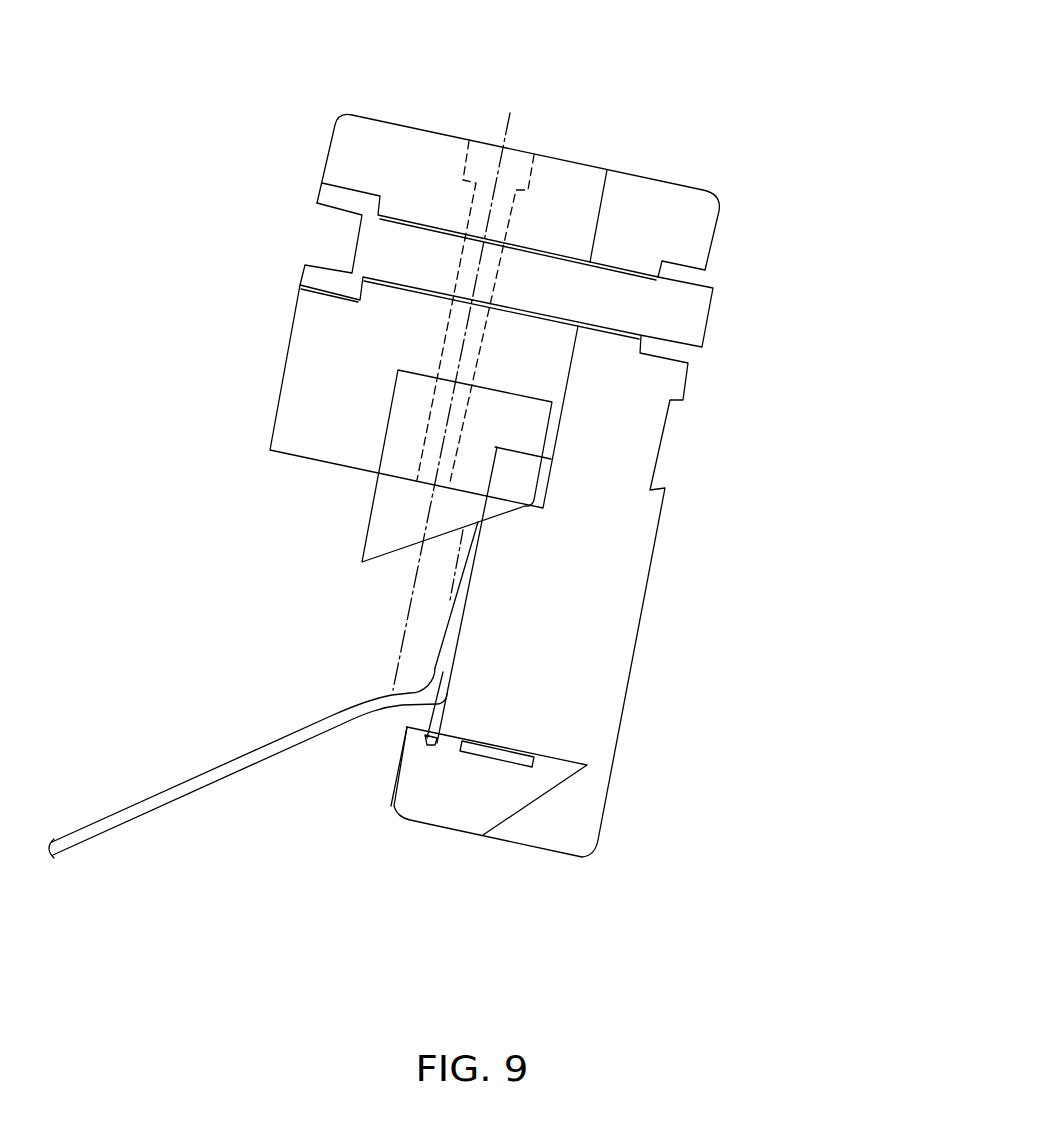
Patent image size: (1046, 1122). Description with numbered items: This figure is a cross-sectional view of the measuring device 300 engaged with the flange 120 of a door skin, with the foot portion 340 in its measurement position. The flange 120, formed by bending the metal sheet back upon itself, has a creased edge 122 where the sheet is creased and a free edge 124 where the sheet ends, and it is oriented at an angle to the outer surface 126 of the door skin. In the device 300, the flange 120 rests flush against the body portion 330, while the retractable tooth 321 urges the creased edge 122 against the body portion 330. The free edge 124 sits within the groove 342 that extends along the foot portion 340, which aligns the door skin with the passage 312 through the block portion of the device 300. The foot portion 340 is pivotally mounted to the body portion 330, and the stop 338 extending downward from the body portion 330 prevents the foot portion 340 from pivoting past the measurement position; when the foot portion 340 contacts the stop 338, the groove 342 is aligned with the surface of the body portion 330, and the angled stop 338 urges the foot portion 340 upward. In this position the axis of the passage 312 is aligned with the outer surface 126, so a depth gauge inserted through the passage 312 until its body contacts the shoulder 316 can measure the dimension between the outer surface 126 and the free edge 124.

The measuring device 300 is at (714, 118).
The passage 312 is at (473, 203).
The shoulder 316 is at (518, 192).
The retractable tooth 321 is at (370, 512).
The body portion 330 is at (577, 710).
The stop 338 is at (547, 838).
The foot portion 340 is at (418, 818).
The groove 342 is at (437, 735).
The flange 120 is at (452, 647).
The creased edge 122 is at (470, 530).
The free edge 124 is at (437, 737).
The outer surface 126 is at (392, 695).